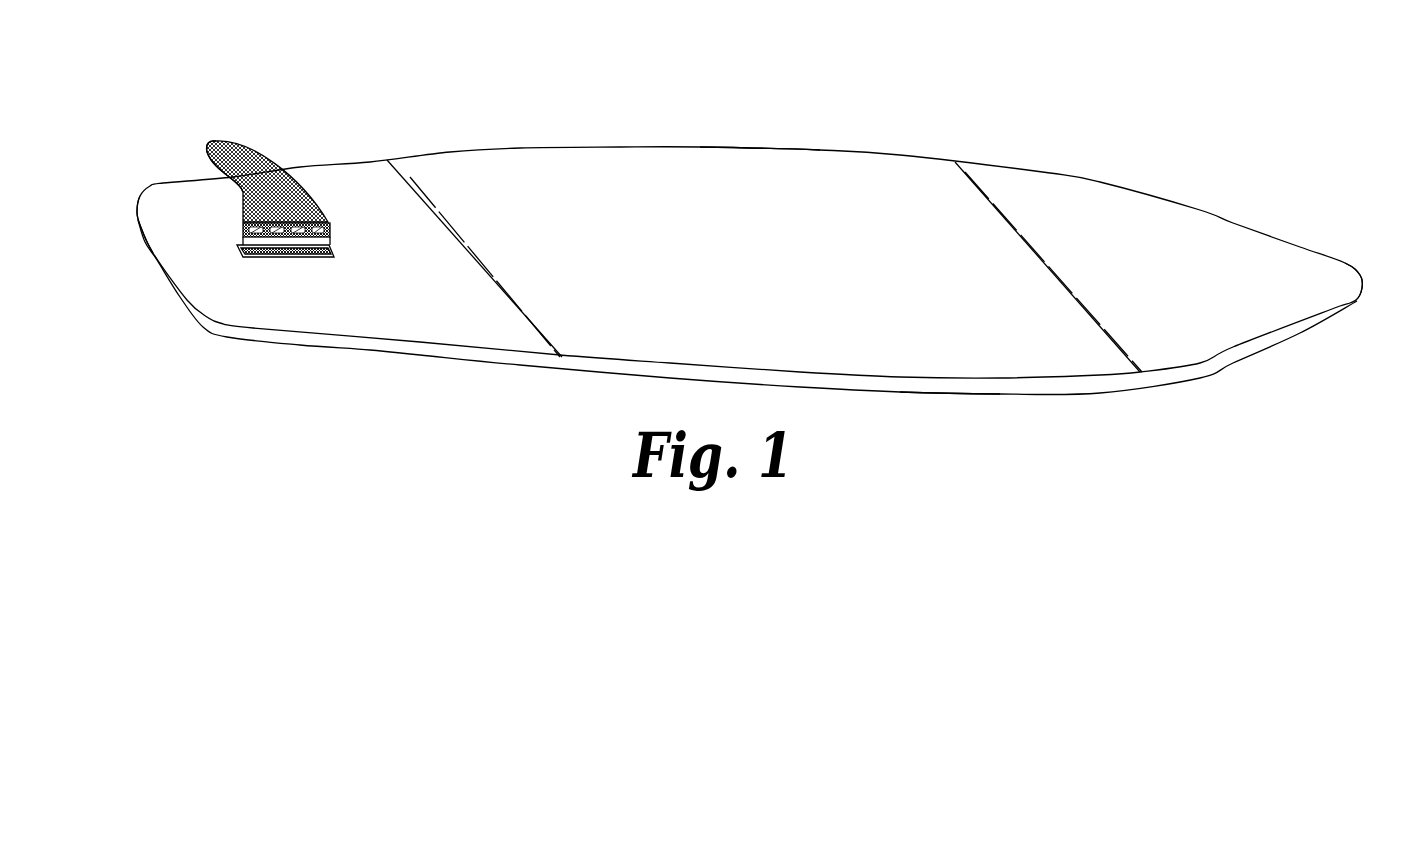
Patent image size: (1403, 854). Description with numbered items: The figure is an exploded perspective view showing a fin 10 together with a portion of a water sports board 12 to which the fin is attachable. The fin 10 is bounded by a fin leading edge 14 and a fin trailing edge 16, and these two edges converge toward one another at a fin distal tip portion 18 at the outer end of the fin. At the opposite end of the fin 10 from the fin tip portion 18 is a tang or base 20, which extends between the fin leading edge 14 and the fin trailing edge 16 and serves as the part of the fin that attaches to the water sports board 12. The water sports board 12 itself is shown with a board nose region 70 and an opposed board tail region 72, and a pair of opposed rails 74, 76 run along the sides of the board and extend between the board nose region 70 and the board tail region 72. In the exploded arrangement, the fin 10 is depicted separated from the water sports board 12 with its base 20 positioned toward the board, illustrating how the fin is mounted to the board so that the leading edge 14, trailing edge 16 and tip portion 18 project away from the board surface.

The fin 10 is at (290, 151).
The water sports board 12 is at (1030, 128).
The fin leading edge 14 is at (310, 187).
The fin trailing edge 16 is at (245, 198).
The fin distal tip portion 18 is at (210, 147).
The base 20 is at (328, 226).
The board nose region 70 is at (1347, 284).
The board tail region 72 is at (187, 259).
The rail 74 is at (940, 388).
The rail 76 is at (728, 153).